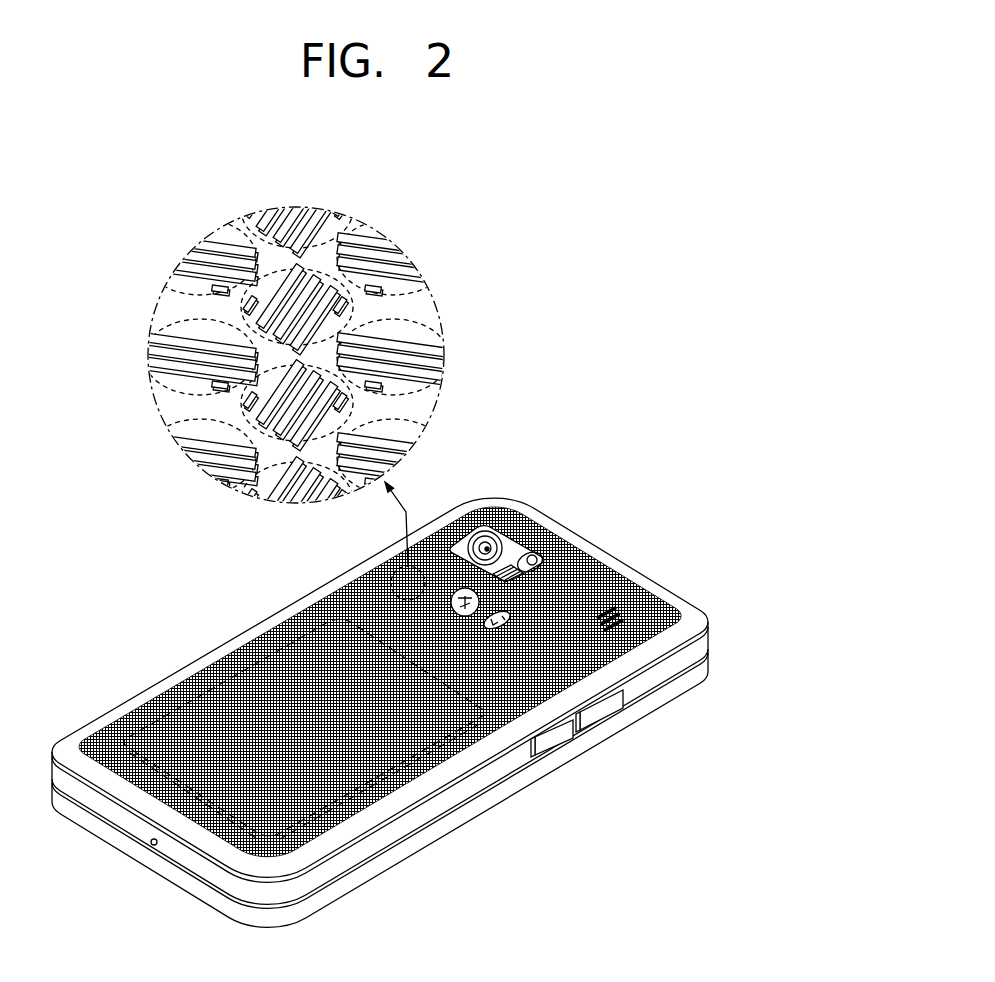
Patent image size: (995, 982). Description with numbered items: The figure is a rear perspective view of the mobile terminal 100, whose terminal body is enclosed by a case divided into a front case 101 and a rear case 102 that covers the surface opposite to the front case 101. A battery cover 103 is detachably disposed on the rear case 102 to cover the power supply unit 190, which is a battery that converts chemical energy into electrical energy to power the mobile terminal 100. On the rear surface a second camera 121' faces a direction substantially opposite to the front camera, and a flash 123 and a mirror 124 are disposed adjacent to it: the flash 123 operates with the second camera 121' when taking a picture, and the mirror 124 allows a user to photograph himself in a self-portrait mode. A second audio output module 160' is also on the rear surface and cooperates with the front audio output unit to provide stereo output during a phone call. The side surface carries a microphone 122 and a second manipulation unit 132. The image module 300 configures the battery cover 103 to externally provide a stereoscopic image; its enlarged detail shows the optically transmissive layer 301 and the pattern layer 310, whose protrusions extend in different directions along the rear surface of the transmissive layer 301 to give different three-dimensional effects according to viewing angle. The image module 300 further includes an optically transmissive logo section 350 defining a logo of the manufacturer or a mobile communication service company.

The mobile terminal 100 is at (417, 699).
The front case 101 is at (708, 672).
The rear case 102 is at (708, 650).
The battery cover 103 is at (706, 619).
The second camera 121' is at (534, 518).
The microphone 122 is at (151, 845).
The flash 123 is at (561, 578).
The mirror 124 is at (534, 560).
The second manipulation unit 132 is at (558, 737).
The second audio output module 160' is at (658, 582).
The power supply unit 190 is at (236, 680).
The image module 300 is at (317, 383).
The optically transmissive layer 301 is at (392, 316).
The pattern layer 310 is at (430, 350).
The logo section 350 is at (512, 605).